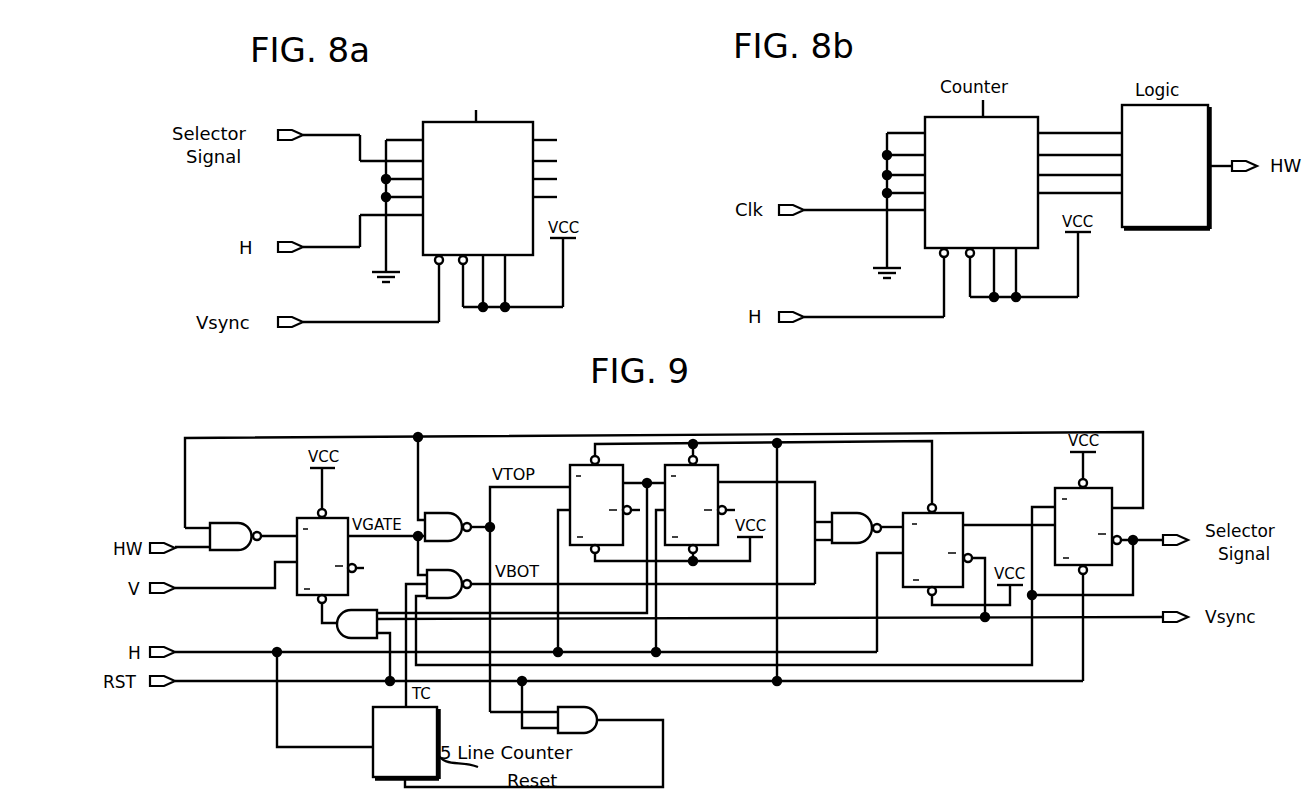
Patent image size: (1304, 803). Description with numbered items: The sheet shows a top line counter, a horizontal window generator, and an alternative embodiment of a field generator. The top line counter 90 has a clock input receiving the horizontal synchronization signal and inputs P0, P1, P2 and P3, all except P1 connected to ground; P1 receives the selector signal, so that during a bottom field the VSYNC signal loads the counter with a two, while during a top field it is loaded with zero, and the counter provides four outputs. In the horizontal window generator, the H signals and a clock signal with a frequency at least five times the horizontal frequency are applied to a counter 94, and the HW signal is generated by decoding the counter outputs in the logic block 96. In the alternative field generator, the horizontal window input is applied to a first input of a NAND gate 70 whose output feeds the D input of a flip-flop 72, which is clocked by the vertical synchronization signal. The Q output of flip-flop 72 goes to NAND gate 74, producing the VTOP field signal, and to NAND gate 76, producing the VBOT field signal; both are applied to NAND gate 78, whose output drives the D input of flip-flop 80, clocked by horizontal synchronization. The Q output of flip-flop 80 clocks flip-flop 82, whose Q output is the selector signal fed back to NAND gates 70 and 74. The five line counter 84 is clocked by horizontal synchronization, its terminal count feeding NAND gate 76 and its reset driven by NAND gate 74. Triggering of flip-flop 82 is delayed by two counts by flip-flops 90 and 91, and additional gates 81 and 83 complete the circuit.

In FIG. 9, the NAND gate 70 is at (235, 536).
In FIG. 9, the flip-flop 72 is at (342, 519).
In FIG. 9, the NAND gate 74 is at (448, 527).
In FIG. 9, the NAND gate 76 is at (449, 584).
In FIG. 9, the NAND gate 78 is at (856, 528).
In FIG. 9, the flip-flop 80 is at (958, 515).
In FIG. 9, the AND gate 81 is at (357, 624).
In FIG. 9, the flip-flop 82 is at (1096, 490).
In FIG. 9, the AND gate 83 is at (577, 720).
In FIG. 9, the five line counter 84 is at (373, 717).
In FIG. 8a, the counter 90 is at (478, 187).
In FIG. 9, the counter 90 is at (632, 457).
In FIG. 9, the flip-flop 91 is at (728, 457).
In FIG. 8b, the counter 94 is at (981, 178).
In FIG. 8b, the logic block 96 is at (1166, 167).